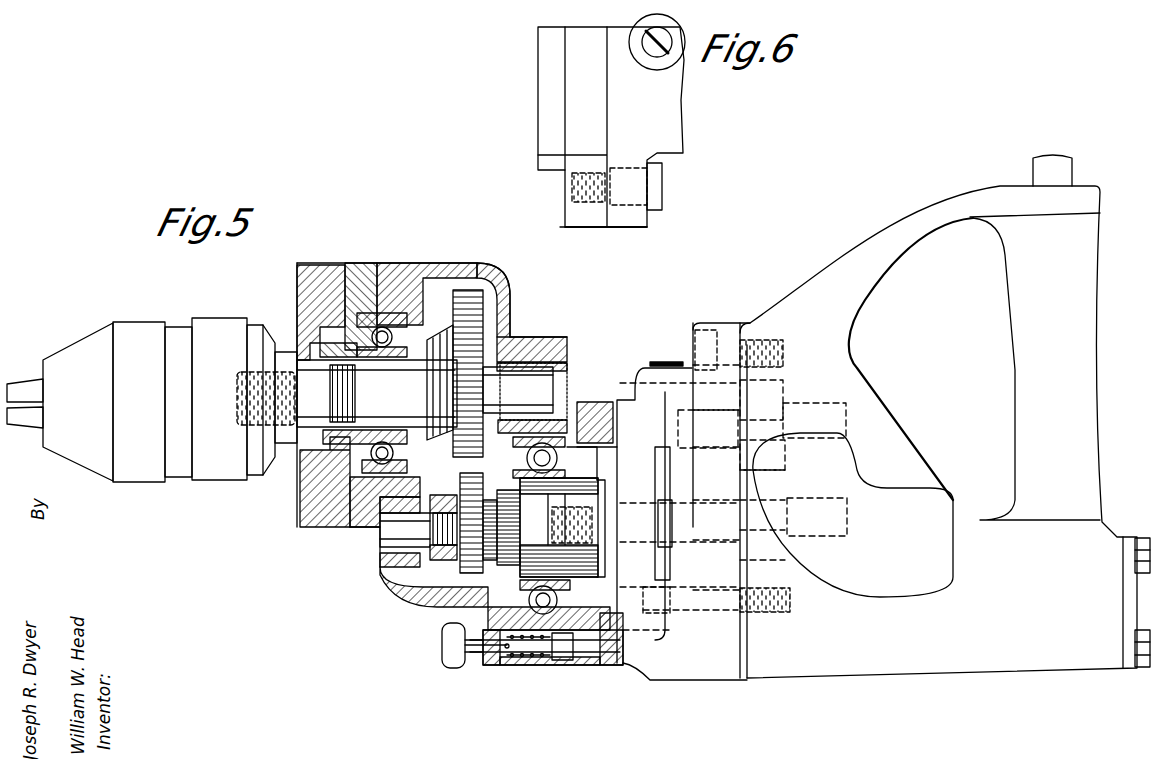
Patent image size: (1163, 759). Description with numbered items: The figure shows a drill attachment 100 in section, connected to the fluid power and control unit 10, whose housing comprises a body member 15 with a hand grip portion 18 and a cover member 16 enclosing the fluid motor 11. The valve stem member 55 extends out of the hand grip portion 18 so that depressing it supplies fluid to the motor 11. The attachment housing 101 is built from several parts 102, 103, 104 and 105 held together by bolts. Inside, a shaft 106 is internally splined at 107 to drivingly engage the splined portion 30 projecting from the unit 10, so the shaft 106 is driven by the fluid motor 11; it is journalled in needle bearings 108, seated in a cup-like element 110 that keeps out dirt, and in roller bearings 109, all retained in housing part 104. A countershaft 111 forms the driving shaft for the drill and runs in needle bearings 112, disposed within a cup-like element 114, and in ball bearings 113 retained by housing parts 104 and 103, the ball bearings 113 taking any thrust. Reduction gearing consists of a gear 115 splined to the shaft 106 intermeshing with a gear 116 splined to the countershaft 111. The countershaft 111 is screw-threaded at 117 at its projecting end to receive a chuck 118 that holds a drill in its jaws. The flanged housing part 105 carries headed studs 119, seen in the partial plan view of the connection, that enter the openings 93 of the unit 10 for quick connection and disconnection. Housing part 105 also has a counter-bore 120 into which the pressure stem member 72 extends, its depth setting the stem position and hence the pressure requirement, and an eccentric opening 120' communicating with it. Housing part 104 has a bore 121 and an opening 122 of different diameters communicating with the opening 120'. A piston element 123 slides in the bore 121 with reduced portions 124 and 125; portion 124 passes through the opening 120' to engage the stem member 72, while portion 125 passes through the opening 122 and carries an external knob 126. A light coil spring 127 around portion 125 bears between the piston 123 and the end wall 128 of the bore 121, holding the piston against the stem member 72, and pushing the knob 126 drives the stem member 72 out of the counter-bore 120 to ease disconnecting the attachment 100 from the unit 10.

In FIG. 5, the power and control unit 10 is at (796, 265).
In FIG. 5, the fluid motor 11 is at (793, 380).
In FIG. 5, the body member 15 is at (898, 425).
In FIG. 5, the cover member 16 is at (712, 330).
In FIG. 6, the cover member 16 is at (648, 224).
In FIG. 5, the hand grip portion 18 is at (1084, 351).
In FIG. 5, the splined portion 30 is at (603, 505).
In FIG. 5, the stem member 55 is at (1022, 177).
In FIG. 5, the stem member 72 is at (656, 652).
In FIG. 6, the openings 93 is at (633, 165).
In FIG. 5, the drill attachment 100 is at (458, 243).
In FIG. 5, the housing 101 is at (518, 285).
In FIG. 5, the housing part 102 is at (297, 278).
In FIG. 5, the housing part 103 is at (358, 263).
In FIG. 5, the housing part 104 is at (415, 263).
In FIG. 6, the housing part 104 is at (548, 108).
In FIG. 5, the housing part 105 is at (592, 400).
In FIG. 6, the housing part 105 is at (596, 226).
In FIG. 5, the shaft 106 is at (595, 478).
In FIG. 5, the internal spline 107 is at (540, 527).
In FIG. 5, the needle bearings 108 is at (400, 567).
In FIG. 5, the roller bearings 109 is at (527, 459).
In FIG. 5, the cup-like element 110 is at (378, 545).
In FIG. 5, the countershaft 111 is at (398, 384).
In FIG. 5, the needle bearings 112 is at (532, 350).
In FIG. 5, the ball bearings 113 is at (400, 330).
In FIG. 5, the cup-like element 114 is at (570, 372).
In FIG. 5, the gear 115 is at (470, 565).
In FIG. 5, the gear 116 is at (488, 265).
In FIG. 5, the screw thread 117 is at (242, 428).
In FIG. 5, the chuck 118 is at (136, 325).
In FIG. 6, the headed studs 119 is at (662, 193).
In FIG. 5, the counter-bore 120 is at (679, 510).
In FIG. 5, the opening 120' is at (644, 573).
In FIG. 5, the bore 121 is at (590, 667).
In FIG. 5, the opening 122 is at (486, 660).
In FIG. 5, the piston element 123 is at (560, 663).
In FIG. 5, the reduced portion 124 is at (578, 625).
In FIG. 5, the reduced portion 125 is at (470, 660).
In FIG. 5, the knob 126 is at (444, 650).
In FIG. 5, the coil spring 127 is at (528, 660).
In FIG. 5, the end wall 128 is at (509, 660).